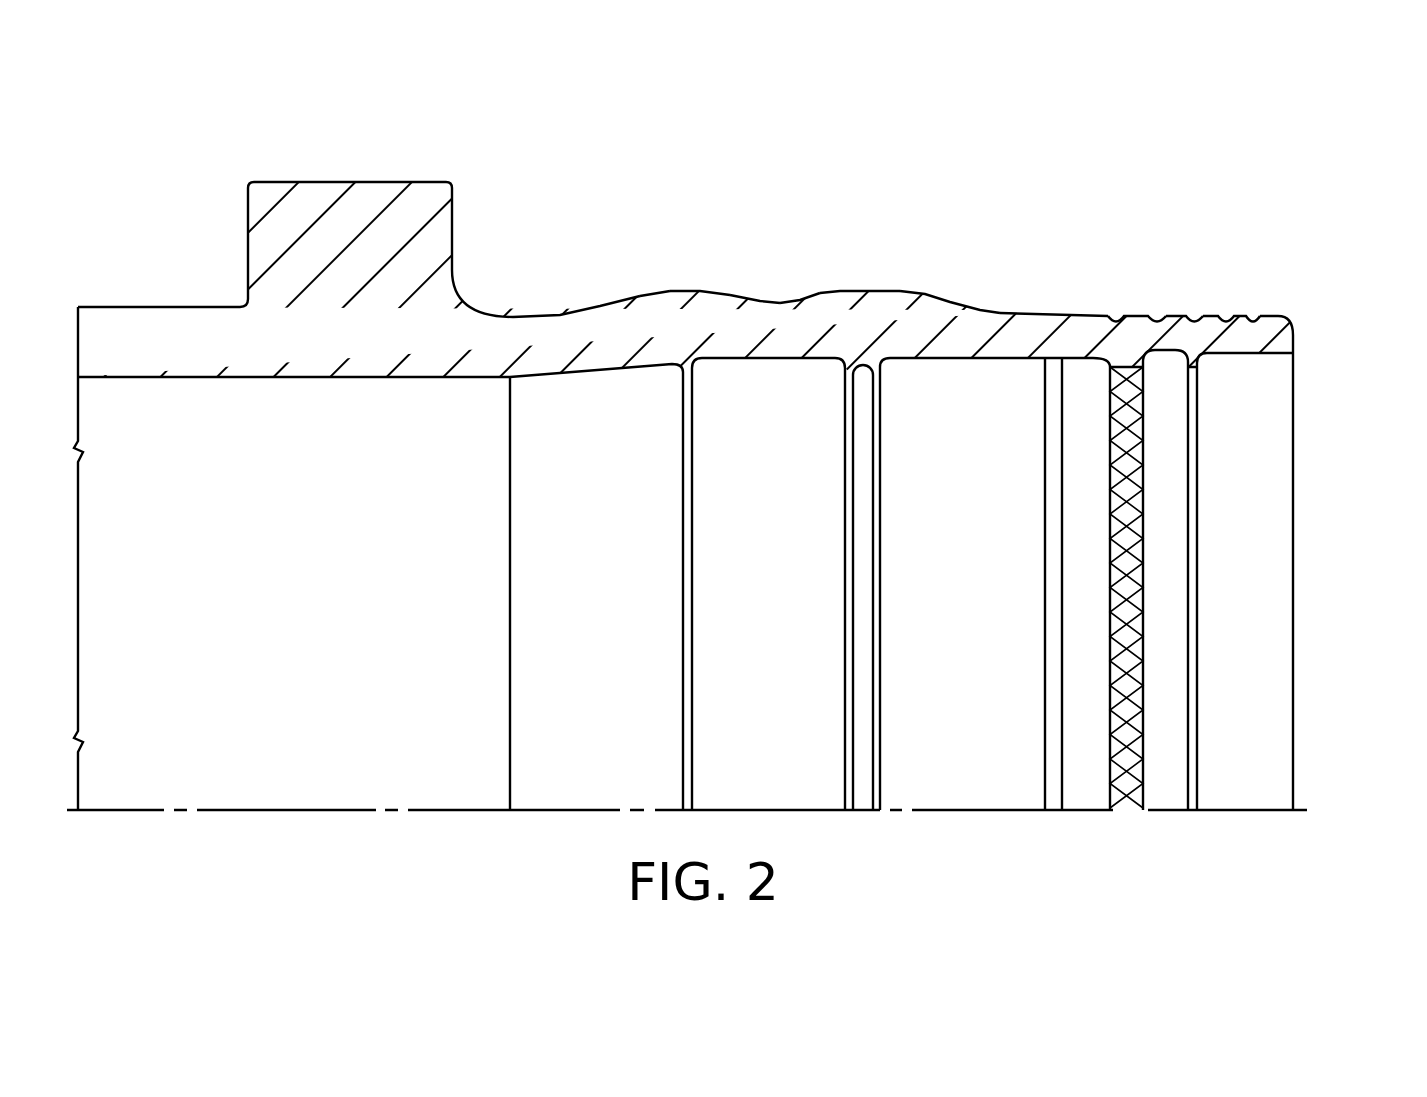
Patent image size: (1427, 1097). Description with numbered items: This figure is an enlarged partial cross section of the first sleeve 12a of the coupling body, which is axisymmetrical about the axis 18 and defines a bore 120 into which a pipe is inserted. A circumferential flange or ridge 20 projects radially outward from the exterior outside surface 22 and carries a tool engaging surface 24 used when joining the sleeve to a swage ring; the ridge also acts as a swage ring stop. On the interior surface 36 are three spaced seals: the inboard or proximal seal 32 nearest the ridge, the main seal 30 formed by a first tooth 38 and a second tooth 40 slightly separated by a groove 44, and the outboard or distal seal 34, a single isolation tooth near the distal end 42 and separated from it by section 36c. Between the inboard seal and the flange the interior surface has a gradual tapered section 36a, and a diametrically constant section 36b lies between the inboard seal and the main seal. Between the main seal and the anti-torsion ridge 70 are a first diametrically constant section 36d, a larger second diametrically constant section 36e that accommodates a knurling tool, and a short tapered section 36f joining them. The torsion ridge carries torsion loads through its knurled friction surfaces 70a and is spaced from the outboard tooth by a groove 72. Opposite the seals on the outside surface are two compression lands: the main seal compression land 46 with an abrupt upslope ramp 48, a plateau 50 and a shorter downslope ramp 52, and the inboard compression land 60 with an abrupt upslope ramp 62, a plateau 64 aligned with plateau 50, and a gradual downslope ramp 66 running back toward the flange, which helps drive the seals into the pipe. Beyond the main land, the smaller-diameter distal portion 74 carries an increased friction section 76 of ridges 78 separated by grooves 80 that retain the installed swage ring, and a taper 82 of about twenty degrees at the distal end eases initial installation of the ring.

The first sleeve 12a is at (730, 250).
The axis 18 is at (296, 811).
The circumferential flange or ridge 20 is at (360, 188).
The exterior outside surface 22 is at (135, 305).
The tool engaging surface 24 is at (247, 245).
The main seal 30 is at (855, 388).
The inboard or proximal seal 32 is at (685, 373).
The outboard or distal seal 34 is at (1200, 365).
The interior surface 36 is at (294, 381).
The tapered section 36a is at (570, 370).
The diametrically constant section 36b is at (770, 362).
The section of interior surface 36c is at (1252, 356).
The first diametrically constant section 36d is at (970, 368).
The second diametrically constant section 36e is at (1082, 358).
The short tapered section 36f is at (1050, 360).
The first tooth 38 is at (878, 373).
The second tooth 40 is at (847, 372).
The distal end 42 is at (1295, 343).
The groove 44 is at (880, 380).
The main seal compression land 46 is at (853, 295).
The upslope ramp 48 is at (938, 302).
The plateau 50 is at (837, 290).
The downslope ramp 52 is at (813, 292).
The inboard compression land 60 is at (697, 293).
The upslope ramp 62 is at (737, 295).
The plateau 64 is at (687, 292).
The downslope ramp 66 is at (600, 303).
The anti-torsion ridge 70 is at (1112, 410).
The friction surfaces 70a is at (1123, 598).
The groove 72 is at (1160, 352).
The distal portion 74 is at (1062, 317).
The increased friction section 76 is at (1163, 313).
The ridges 78 is at (1210, 315).
The grooves 80 is at (1250, 317).
The taper 82 is at (1282, 317).
The bore 120 is at (1282, 543).